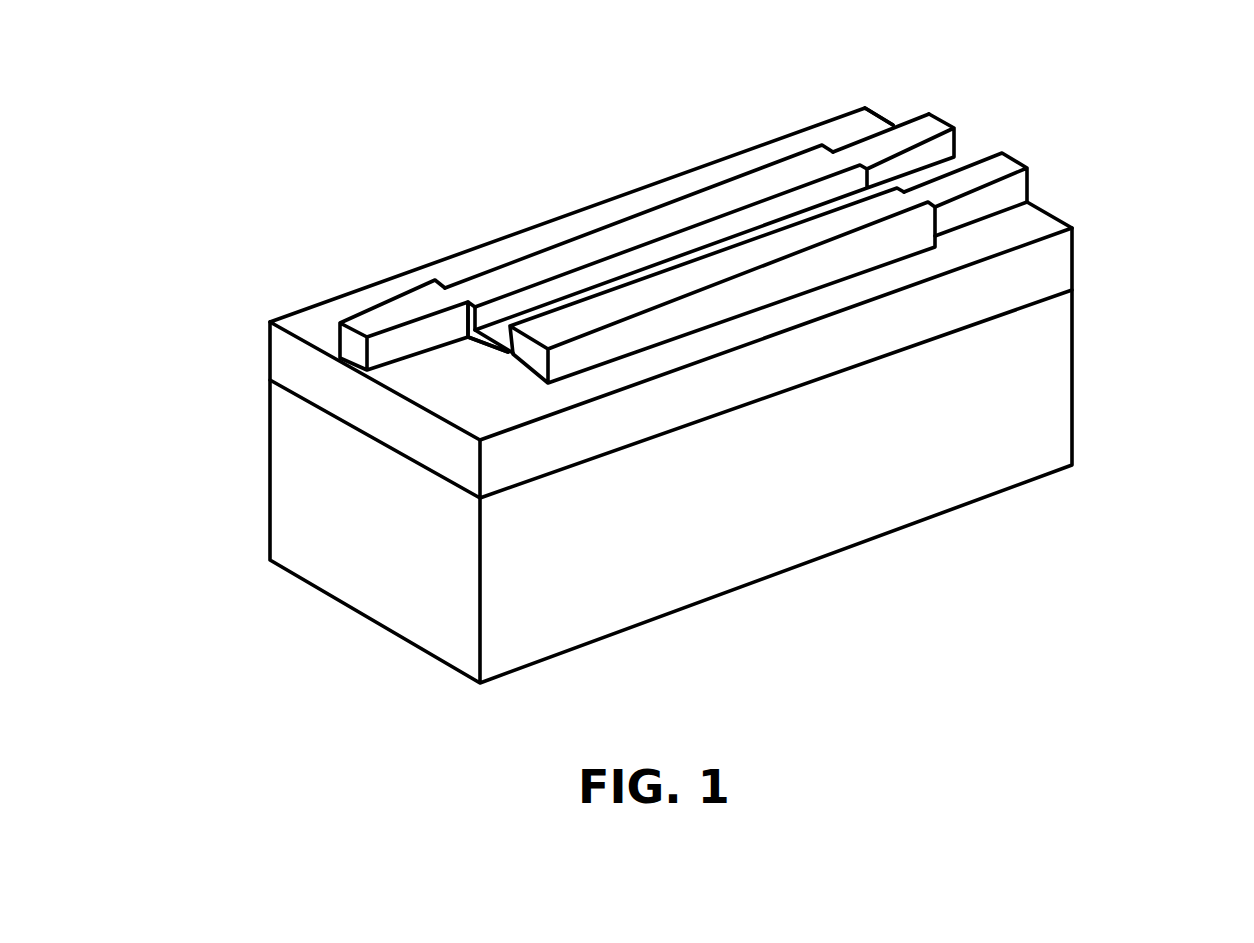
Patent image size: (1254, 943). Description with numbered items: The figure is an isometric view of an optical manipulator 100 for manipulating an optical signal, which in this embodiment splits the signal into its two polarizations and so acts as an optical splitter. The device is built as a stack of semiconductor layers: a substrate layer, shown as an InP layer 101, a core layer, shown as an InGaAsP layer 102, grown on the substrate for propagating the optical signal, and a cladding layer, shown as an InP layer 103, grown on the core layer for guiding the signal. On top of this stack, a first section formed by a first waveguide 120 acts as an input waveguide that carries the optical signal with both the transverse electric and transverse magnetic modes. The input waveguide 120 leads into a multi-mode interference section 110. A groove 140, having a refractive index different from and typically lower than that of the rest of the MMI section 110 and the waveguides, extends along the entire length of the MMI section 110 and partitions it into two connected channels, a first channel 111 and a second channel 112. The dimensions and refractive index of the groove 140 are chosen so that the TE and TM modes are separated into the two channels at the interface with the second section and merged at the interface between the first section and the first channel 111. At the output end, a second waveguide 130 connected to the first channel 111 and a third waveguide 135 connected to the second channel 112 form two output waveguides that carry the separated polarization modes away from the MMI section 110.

The optical manipulator 100 is at (433, 177).
The InP layer 101 is at (1078, 396).
The InGaAsP layer 102 is at (1066, 258).
The InP layer 103 is at (1035, 233).
The multi-mode interference section 110 is at (468, 341).
The first channel 111 is at (682, 216).
The second channel 112 is at (748, 260).
The first waveguide 120 is at (379, 318).
The second waveguide 130 is at (912, 128).
The third waveguide 135 is at (1000, 165).
The groove 140 is at (598, 290).